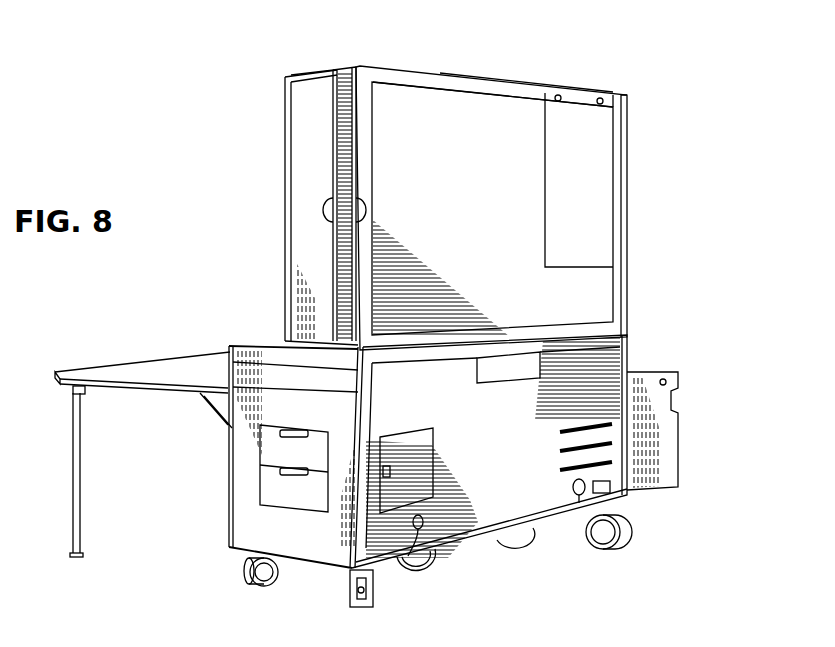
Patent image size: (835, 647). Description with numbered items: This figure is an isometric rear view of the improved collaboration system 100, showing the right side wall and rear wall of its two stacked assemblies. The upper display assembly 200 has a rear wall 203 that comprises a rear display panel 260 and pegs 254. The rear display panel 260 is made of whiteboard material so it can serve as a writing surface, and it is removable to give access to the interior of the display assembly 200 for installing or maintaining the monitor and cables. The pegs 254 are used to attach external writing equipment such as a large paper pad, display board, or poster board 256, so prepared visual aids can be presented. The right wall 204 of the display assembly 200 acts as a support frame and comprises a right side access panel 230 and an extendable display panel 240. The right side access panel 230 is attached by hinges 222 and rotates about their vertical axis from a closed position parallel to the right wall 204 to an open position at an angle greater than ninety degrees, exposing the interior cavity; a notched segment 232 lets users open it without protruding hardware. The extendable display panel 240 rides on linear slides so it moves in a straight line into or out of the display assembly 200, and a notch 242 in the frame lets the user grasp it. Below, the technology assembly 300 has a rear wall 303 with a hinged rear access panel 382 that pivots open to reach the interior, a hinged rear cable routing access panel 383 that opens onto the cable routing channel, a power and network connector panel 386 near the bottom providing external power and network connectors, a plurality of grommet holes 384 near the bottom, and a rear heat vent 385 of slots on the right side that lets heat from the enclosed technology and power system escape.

The improved collaboration system 100 is at (140, 116).
The display assembly 200 is at (683, 130).
The hinges 222 is at (283, 80).
The right side access panel 230 is at (312, 92).
The extendable display panel 240 is at (340, 92).
The notched segment 232 is at (328, 205).
The notch 242 is at (358, 208).
The right wall 204 is at (360, 90).
The rear wall 203 is at (457, 80).
The rear display panel 260 is at (515, 107).
The pegs 254 is at (628, 97).
The poster board 256 is at (583, 222).
The technology assembly 300 is at (697, 391).
The rear wall 303 is at (628, 337).
The rear cable routing access panel 383 is at (507, 367).
The rear access panel 382 is at (430, 497).
The grommet holes 384 is at (580, 503).
The rear heat vent 385 is at (603, 467).
The power and network connector panel 386 is at (603, 488).